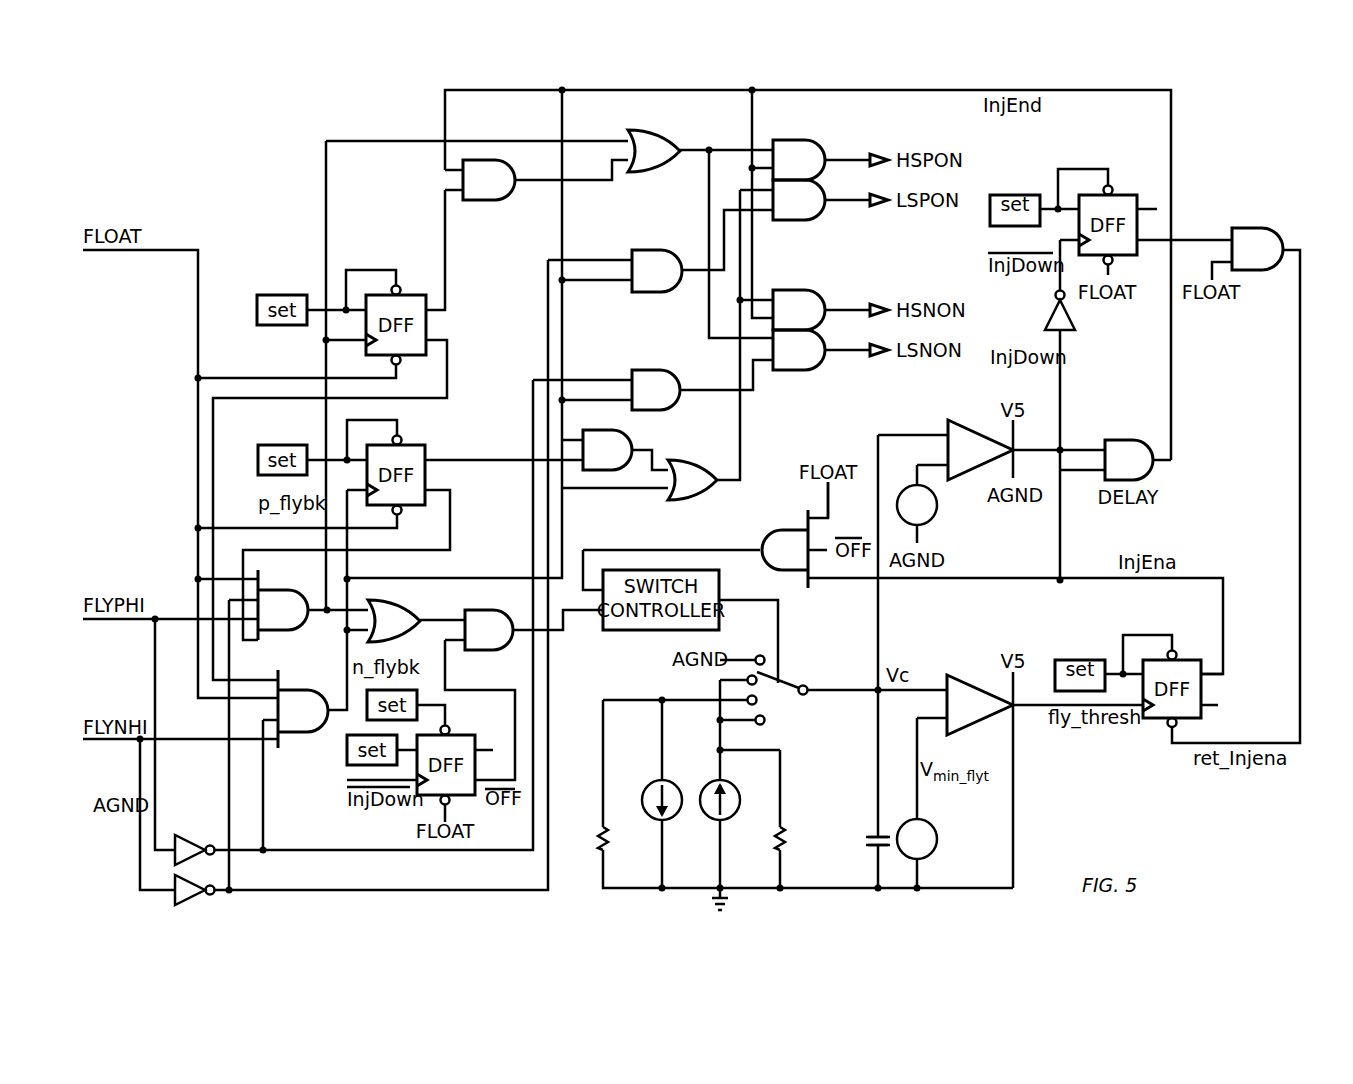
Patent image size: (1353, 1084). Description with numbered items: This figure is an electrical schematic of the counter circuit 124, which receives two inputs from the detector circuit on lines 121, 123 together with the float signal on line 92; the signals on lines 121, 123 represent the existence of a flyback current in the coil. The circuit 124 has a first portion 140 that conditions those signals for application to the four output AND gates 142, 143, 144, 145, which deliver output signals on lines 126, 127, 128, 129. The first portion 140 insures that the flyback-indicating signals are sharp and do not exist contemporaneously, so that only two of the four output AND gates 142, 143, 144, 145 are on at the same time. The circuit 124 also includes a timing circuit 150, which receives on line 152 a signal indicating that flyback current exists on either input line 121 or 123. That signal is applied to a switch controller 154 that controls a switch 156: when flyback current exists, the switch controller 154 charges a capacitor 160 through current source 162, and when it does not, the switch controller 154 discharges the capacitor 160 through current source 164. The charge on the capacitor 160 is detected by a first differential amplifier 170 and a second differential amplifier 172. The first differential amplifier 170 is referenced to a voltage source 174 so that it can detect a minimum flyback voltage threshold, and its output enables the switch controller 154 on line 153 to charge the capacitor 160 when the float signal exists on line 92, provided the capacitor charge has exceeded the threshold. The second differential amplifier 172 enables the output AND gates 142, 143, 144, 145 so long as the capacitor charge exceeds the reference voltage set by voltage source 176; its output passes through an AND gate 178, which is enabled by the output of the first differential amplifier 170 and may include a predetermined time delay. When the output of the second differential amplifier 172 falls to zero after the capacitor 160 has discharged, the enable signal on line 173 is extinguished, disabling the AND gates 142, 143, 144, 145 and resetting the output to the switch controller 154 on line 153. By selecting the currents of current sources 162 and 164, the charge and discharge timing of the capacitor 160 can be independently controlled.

The first portion 140 is at (249, 158).
The counter circuit 124 is at (1240, 157).
The timing circuit 150 is at (1112, 788).
The output AND gate 142 is at (812, 140).
The output AND gate 143 is at (815, 215).
The output AND gate 144 is at (797, 288).
The output AND gate 145 is at (815, 371).
The output line 126 is at (858, 157).
The output line 127 is at (856, 205).
The output line 128 is at (858, 308).
The output line 129 is at (858, 355).
The float signal line 92 is at (198, 440).
The input line 123 is at (115, 627).
The input line 121 is at (180, 745).
The enable line 153 is at (620, 548).
The input line 152 is at (585, 622).
The switch controller 154 is at (622, 632).
The switch 156 is at (796, 720).
The current source 164 is at (648, 784).
The current source 162 is at (706, 784).
The capacitor 160 is at (866, 842).
The first differential amplifier 170 is at (987, 680).
The second differential amplifier 172 is at (988, 428).
The voltage source 174 is at (937, 839).
The voltage source 176 is at (937, 505).
The enable line 173 is at (1082, 447).
The AND gate 178 is at (1122, 438).